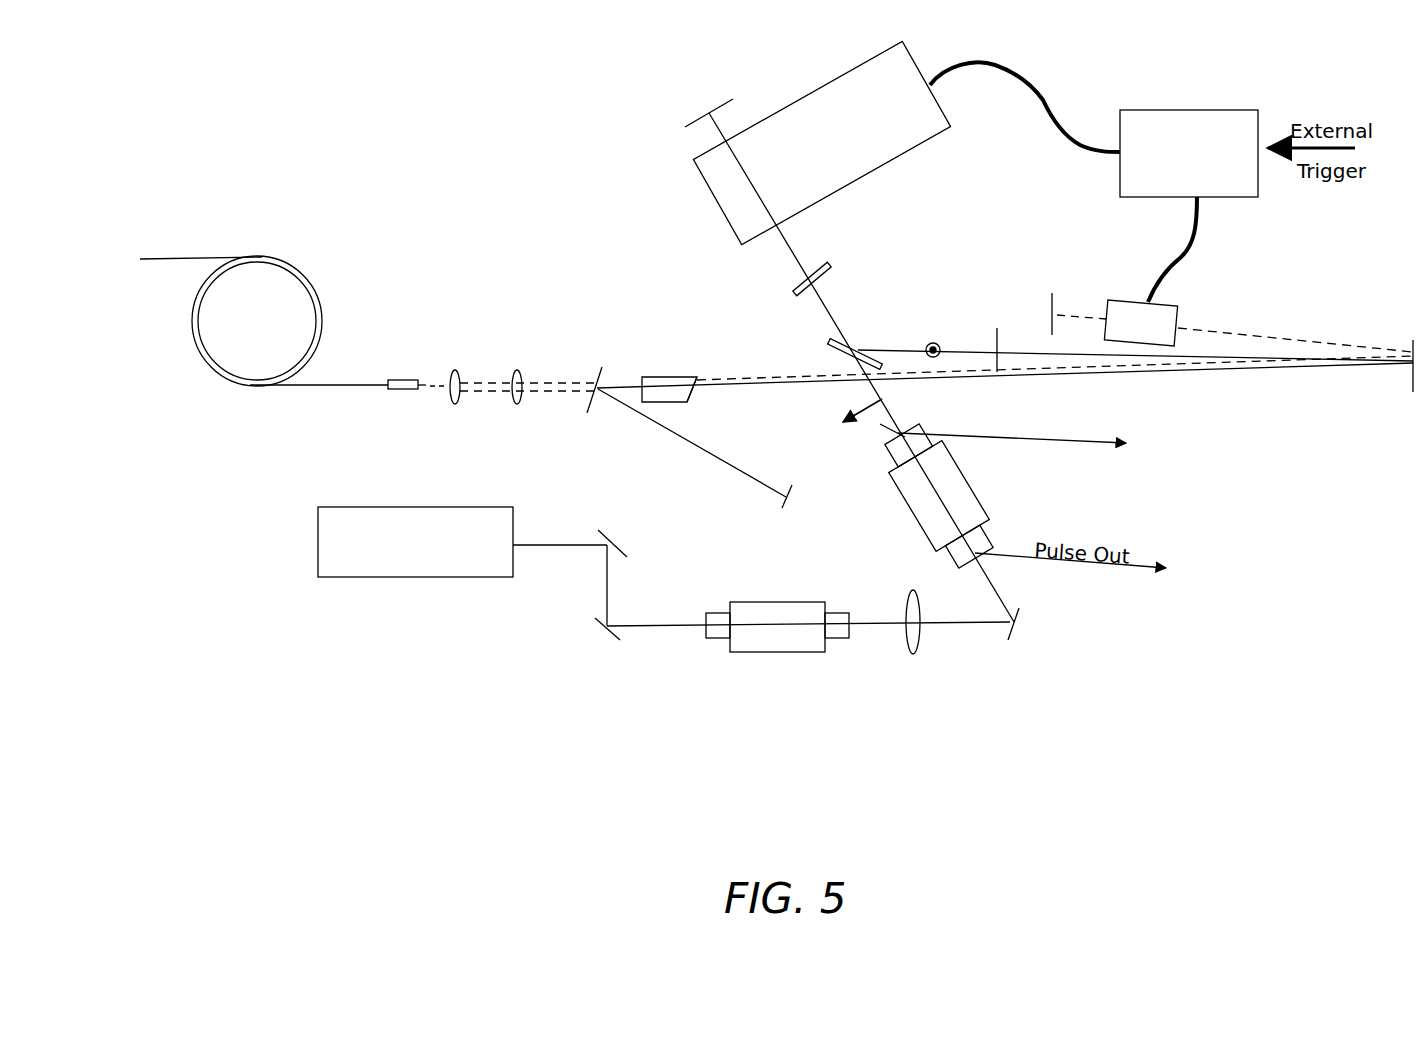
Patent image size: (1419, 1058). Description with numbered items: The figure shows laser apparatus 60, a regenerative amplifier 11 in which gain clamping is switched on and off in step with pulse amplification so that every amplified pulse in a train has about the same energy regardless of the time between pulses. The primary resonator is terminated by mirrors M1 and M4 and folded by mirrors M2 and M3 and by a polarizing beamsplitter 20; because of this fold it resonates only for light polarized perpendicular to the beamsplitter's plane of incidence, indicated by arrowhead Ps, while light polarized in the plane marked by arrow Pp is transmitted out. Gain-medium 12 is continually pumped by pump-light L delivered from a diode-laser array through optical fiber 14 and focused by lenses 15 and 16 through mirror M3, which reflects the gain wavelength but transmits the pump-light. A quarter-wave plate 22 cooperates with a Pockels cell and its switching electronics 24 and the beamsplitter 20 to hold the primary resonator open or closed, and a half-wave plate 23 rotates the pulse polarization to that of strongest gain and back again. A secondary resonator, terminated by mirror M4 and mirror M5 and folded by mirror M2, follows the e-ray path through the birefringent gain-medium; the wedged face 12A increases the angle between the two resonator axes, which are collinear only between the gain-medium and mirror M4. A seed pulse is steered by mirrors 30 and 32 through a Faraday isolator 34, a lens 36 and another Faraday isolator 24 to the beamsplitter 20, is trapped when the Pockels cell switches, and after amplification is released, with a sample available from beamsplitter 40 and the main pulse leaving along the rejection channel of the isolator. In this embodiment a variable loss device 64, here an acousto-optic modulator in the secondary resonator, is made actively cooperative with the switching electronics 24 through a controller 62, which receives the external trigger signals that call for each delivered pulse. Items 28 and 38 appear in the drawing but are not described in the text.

The regenerative amplifier 11 is at (618, 238).
The gain-medium 12 is at (666, 370).
The face of the gain-medium 12A is at (698, 382).
The optical fiber 14 is at (323, 314).
The lens 15 is at (457, 400).
The lens 16 is at (521, 370).
The polarizing beamsplitter 20 is at (830, 349).
The quarter-wave plate 22 is at (798, 284).
The half-wave plate 23 is at (993, 336).
The Pockels cell 24 is at (813, 206).
The seed pulse laser 28 is at (433, 578).
The mirror 30 is at (601, 532).
The mirror 32 is at (612, 641).
The Faraday isolator 34 is at (799, 652).
The lens 36 is at (924, 646).
The mirror 38 is at (1022, 612).
The beamsplitter 40 is at (884, 428).
The apparatus 60 is at (1094, 755).
The controller 62 is at (1187, 110).
The variable loss device 64 is at (1180, 309).
The mirror M1 is at (698, 115).
The mirror M2 is at (1413, 342).
The mirror M3 is at (588, 409).
The mirror M4 is at (787, 501).
The mirror M5 is at (1051, 297).
The pump-light L is at (433, 380).
The polarization direction Ps is at (935, 342).
The polarization plane Pp is at (833, 413).